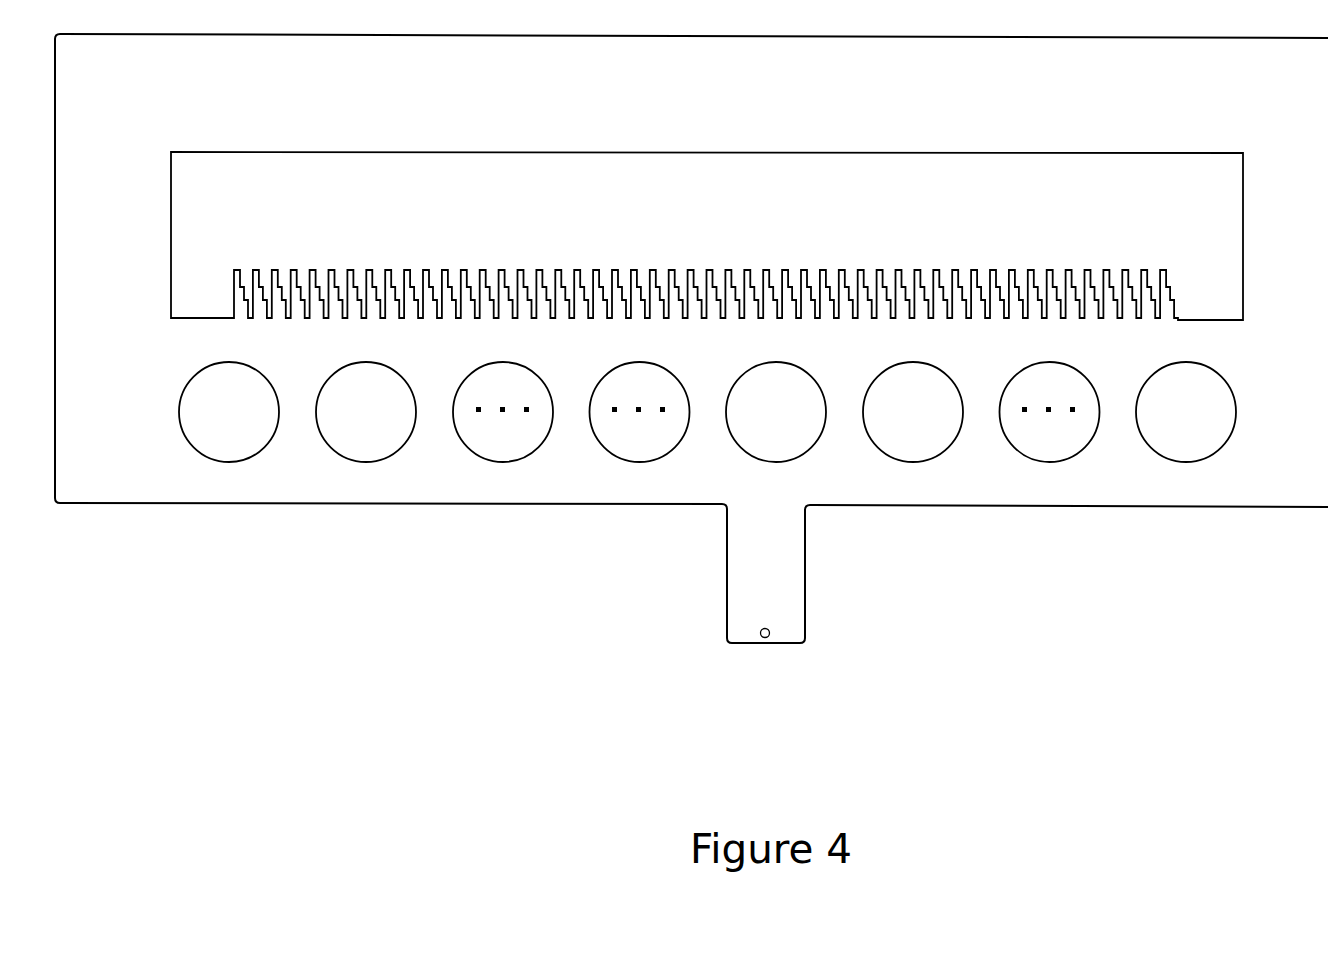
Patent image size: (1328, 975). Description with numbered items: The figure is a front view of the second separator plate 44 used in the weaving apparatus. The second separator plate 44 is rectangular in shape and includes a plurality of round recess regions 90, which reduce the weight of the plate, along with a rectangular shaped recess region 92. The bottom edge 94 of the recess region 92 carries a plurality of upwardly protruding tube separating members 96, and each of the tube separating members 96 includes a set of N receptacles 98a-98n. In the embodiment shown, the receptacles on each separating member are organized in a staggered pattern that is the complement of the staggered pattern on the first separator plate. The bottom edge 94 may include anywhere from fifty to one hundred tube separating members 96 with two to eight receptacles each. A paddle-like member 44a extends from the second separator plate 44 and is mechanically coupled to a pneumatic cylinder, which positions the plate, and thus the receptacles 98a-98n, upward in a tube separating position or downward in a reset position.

The second separator plate 44 is at (533, 638).
The paddle-like member 44a is at (806, 549).
The round recess regions 90 is at (246, 426).
The rectangular shaped recess region 92 is at (606, 235).
The bottom edge 94 is at (670, 284).
The tube separating members 96 is at (272, 270).
The receptacle 98a is at (1167, 300).
The receptacle 98n is at (1180, 318).